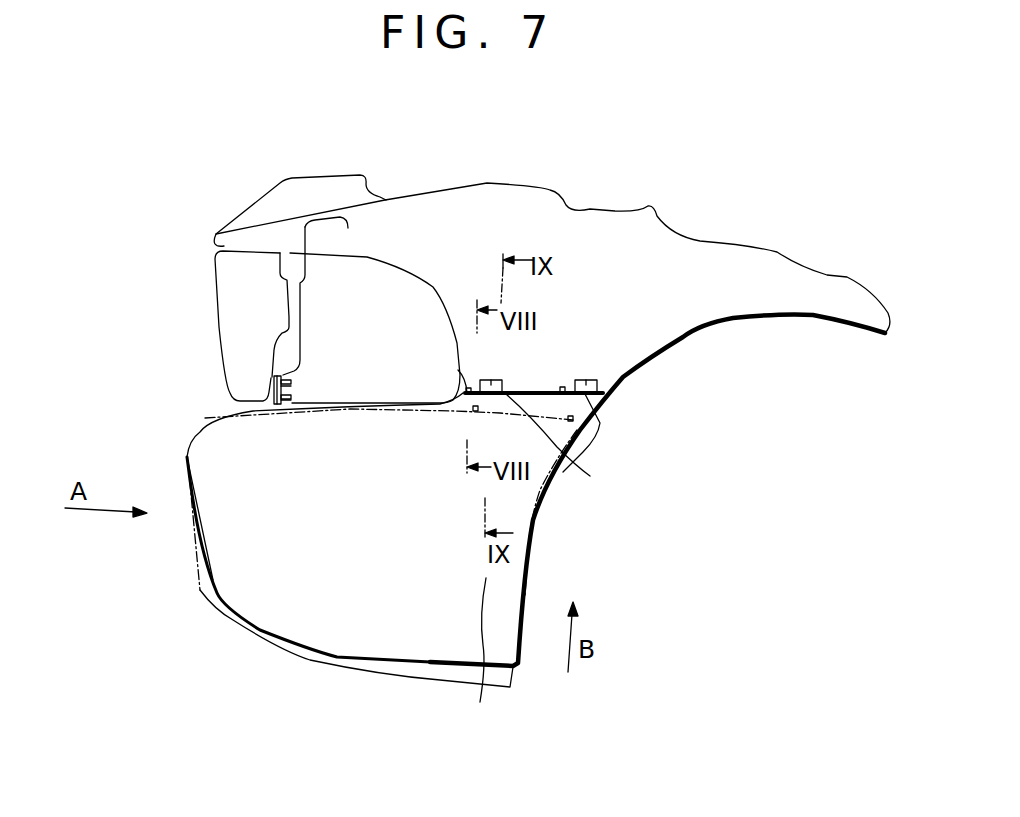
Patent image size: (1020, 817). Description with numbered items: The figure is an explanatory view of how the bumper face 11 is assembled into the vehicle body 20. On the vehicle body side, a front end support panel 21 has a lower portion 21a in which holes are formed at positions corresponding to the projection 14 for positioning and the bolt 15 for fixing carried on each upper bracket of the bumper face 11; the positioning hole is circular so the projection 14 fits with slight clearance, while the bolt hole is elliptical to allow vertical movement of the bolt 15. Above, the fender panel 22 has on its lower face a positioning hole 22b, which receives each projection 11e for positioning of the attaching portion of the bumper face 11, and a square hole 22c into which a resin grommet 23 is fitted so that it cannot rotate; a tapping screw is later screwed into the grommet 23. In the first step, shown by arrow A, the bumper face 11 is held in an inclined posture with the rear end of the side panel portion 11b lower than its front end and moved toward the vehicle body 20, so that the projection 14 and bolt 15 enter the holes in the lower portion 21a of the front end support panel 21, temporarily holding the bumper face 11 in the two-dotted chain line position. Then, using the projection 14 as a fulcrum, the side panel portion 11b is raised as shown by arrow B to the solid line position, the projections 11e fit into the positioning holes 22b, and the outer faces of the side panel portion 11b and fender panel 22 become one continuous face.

The bumper face 11 is at (178, 456).
The side panel portion 11b is at (489, 659).
The projection for positioning 11e is at (465, 388).
The projection for positioning 14 is at (283, 395).
The bolt for fixing 15 is at (297, 382).
The vehicle body 20 is at (606, 203).
The front end support panel 21 is at (314, 302).
The lower portion 21a is at (290, 376).
The fender panel 22 is at (777, 296).
The positioning hole 22b is at (470, 410).
The square hole 22c is at (585, 393).
The resin grommet 23 is at (491, 381).